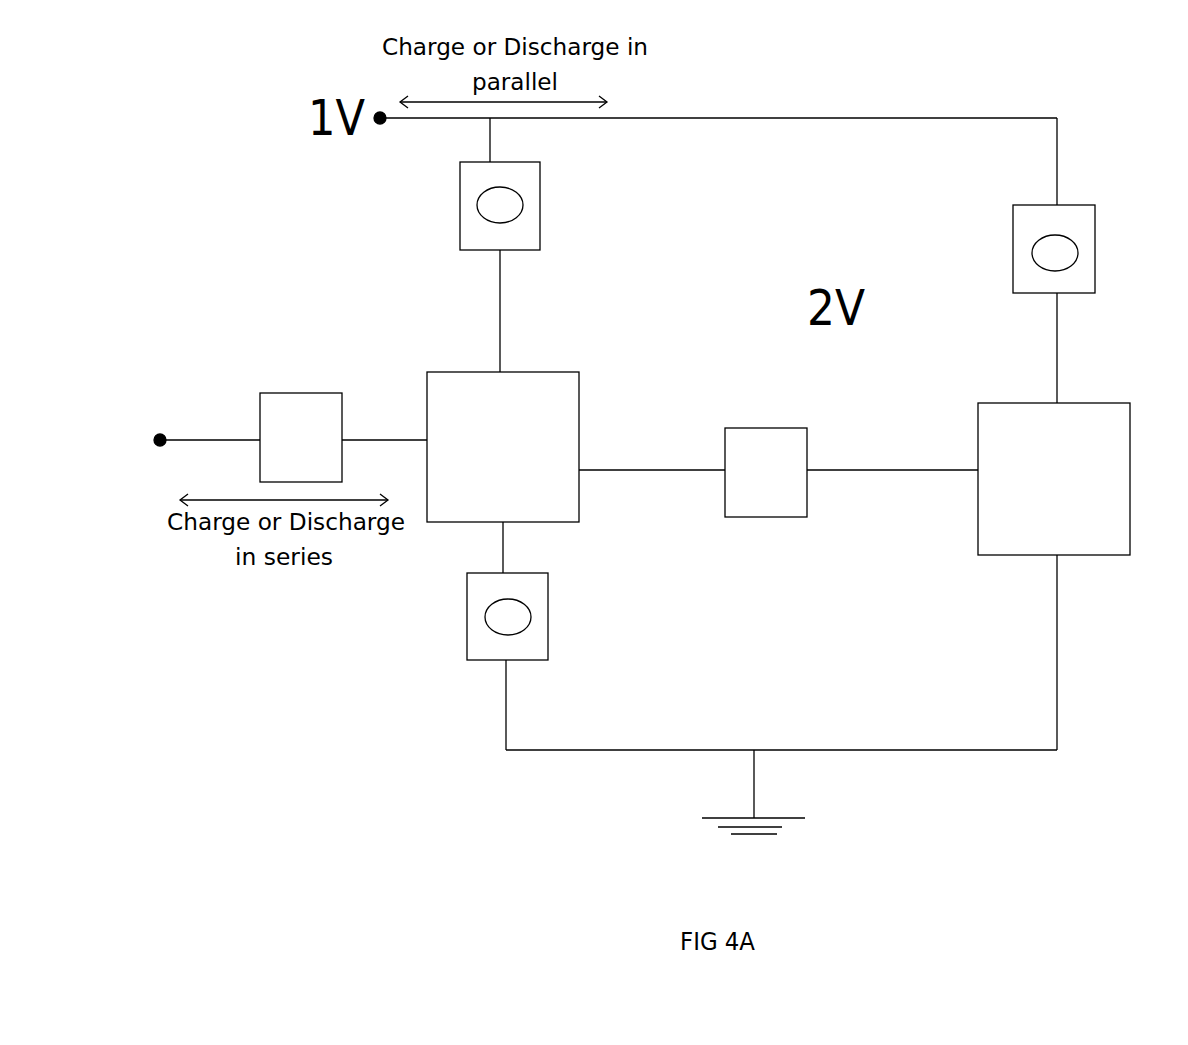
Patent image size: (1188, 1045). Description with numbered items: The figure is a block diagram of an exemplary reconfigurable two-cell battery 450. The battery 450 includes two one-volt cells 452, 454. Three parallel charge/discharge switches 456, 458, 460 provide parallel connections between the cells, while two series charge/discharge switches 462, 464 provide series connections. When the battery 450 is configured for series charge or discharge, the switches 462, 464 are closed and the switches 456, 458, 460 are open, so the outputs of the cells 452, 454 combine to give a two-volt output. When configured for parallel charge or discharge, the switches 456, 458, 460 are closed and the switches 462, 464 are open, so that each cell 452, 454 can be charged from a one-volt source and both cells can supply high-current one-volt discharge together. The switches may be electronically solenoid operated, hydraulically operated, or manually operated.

The reconfigurable 2-cell battery 450 is at (1077, 88).
The 1-volt cell 452 is at (579, 408).
The 1-volt cell 454 is at (1130, 493).
The parallel charge/discharge switch 456 is at (540, 235).
The parallel charge/discharge switch 458 is at (1095, 232).
The parallel charge/discharge switch 460 is at (548, 645).
The series charge/discharge switch 462 is at (283, 392).
The series charge/discharge switch 464 is at (817, 441).